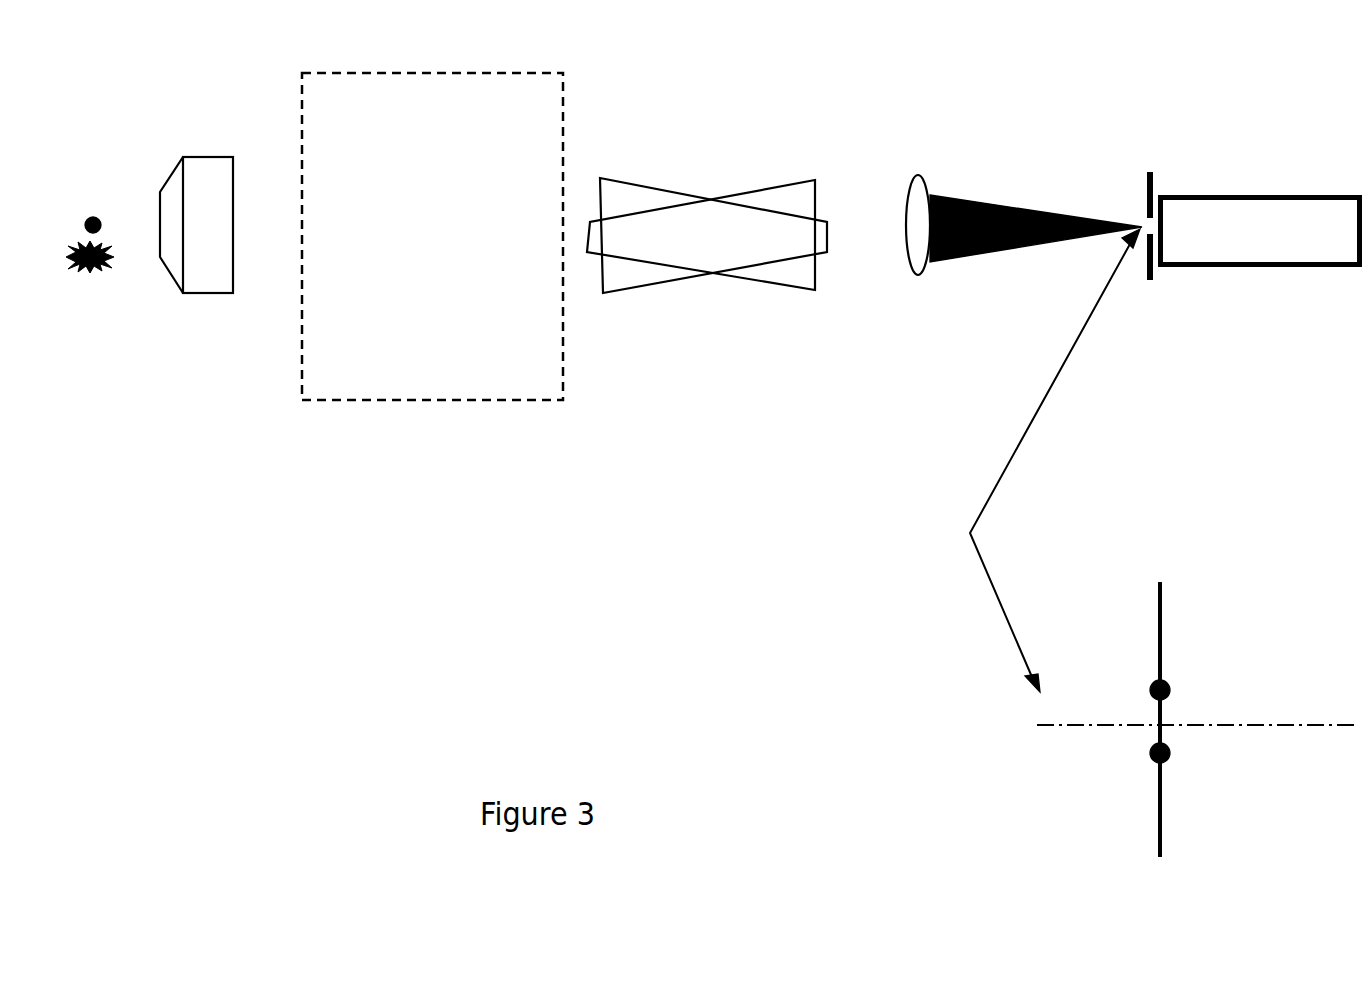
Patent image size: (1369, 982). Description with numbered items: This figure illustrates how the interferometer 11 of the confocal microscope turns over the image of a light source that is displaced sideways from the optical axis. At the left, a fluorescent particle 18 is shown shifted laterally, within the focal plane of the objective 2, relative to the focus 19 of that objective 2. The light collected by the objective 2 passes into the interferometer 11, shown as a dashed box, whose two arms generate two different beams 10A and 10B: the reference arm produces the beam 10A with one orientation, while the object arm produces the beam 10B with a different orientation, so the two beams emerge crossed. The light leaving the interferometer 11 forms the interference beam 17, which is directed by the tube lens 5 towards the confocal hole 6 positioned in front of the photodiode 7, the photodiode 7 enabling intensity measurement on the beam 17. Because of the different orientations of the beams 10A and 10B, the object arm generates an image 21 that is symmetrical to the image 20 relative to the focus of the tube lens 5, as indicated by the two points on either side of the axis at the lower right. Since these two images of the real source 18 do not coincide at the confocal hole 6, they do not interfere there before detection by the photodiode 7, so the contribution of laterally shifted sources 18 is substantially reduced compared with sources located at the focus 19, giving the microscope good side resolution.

The objective 2 is at (208, 167).
The tube lens 5 is at (915, 262).
The confocal hole 6 is at (1147, 183).
The photodiode 7 is at (1227, 195).
The beam 10A is at (608, 283).
The beam 10B is at (618, 188).
The interferometer 11 is at (320, 400).
The interference beam 17 is at (958, 197).
The fluorescent particle 18 is at (97, 267).
The focus of the objective 19 is at (91, 217).
The image 20 is at (1143, 675).
The image 21 is at (1137, 767).